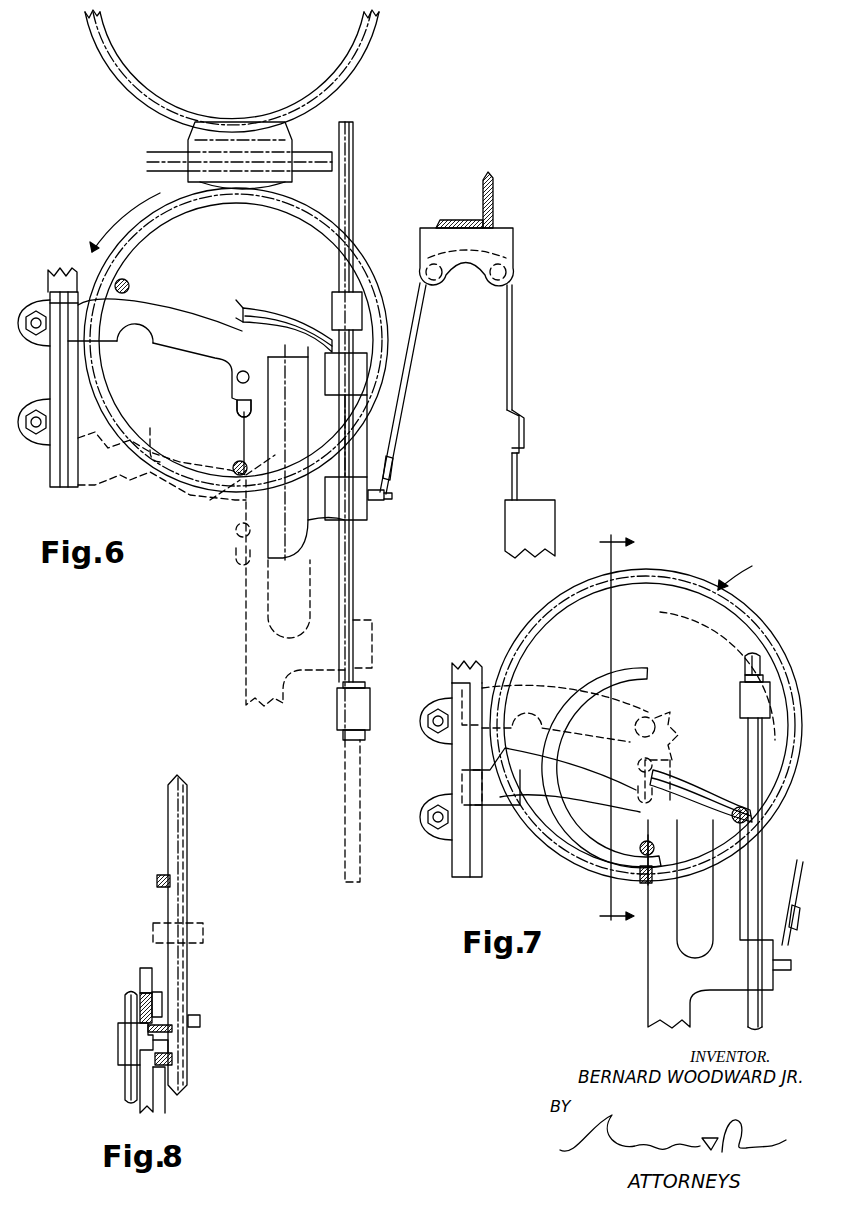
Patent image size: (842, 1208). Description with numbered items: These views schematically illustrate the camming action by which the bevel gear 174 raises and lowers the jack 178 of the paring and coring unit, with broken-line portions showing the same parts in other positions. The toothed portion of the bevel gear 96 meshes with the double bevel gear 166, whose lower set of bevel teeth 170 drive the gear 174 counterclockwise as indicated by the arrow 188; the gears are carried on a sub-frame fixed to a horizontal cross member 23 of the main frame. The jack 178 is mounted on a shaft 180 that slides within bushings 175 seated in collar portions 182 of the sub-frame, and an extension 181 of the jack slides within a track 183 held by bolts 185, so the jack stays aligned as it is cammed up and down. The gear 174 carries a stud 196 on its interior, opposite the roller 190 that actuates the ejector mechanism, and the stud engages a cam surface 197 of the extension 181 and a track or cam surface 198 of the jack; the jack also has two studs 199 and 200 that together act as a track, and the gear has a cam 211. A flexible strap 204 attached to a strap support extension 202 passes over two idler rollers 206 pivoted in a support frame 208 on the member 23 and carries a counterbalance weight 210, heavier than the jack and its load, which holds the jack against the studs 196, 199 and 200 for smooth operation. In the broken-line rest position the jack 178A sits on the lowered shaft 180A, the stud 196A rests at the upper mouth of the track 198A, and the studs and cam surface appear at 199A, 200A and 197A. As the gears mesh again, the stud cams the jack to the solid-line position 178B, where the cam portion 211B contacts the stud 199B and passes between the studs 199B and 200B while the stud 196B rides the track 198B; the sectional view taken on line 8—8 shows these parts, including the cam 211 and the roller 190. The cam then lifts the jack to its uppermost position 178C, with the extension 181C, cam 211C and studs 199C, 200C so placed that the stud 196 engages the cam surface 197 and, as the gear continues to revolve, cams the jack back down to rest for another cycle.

In FIG. 6, the bevel gear 96 is at (372, 58).
In FIG. 6, the double bevel gear 166 is at (290, 140).
In FIG. 6, the lower set of bevel teeth 170 is at (290, 180).
In FIG. 6, the shaft 180 is at (353, 150).
In FIG. 7, the shaft 180 is at (763, 1010).
In FIG. 8, the shaft 180 is at (124, 1004).
In FIG. 6, the shaft in rest position 180A is at (345, 808).
In FIG. 6, the collar portions of sub-frame 182 is at (360, 305).
In FIG. 6, the bevel gear 174 is at (361, 248).
In FIG. 7, the bevel gear 174 is at (690, 580).
In FIG. 6, the bushings 175 is at (357, 272).
In FIG. 6, the arrow 188 is at (121, 219).
In FIG. 7, the arrow 188 is at (751, 572).
In FIG. 6, the track 183 is at (52, 292).
In FIG. 7, the track 183 is at (451, 769).
In FIG. 6, the bolts 185 is at (36, 316).
In FIG. 6, the extension 181 is at (165, 322).
In FIG. 8, the extension 181 is at (145, 1024).
In FIG. 6, the cam surface 197 is at (138, 327).
In FIG. 6, the cam surface in intermediate position 197A is at (150, 428).
In FIG. 6, the stud 199 is at (236, 377).
In FIG. 6, the stud 200 is at (236, 405).
In FIG. 6, the stud 196 is at (128, 282).
In FIG. 8, the stud 196 is at (163, 1024).
In FIG. 6, the track or cam surface 198 is at (247, 318).
In FIG. 6, the upper mouth of track 198A is at (238, 460).
In FIG. 6, the stud in rest position 196A is at (238, 476).
In FIG. 6, the stud in rest position 199A is at (237, 535).
In FIG. 6, the stud in rest position 200A is at (234, 562).
In FIG. 6, the jack 178 is at (262, 447).
In FIG. 6, the jack in rest position 178A is at (260, 634).
In FIG. 6, the flexible strap 204 is at (405, 356).
In FIG. 7, the flexible strap 204 is at (788, 915).
In FIG. 6, the strap support extension 202 is at (390, 495).
In FIG. 6, the support frame 208 is at (513, 247).
In FIG. 6, the idler rollers 206 is at (497, 283).
In FIG. 6, the horizontal cross member 23 is at (494, 213).
In FIG. 6, the counterbalance weight 210 is at (547, 522).
In FIG. 7, the section line 8— 8 is at (609, 731).
In FIG. 7, the extension in uppermost position 181C is at (552, 690).
In FIG. 7, the cam portion 211B is at (620, 818).
In FIG. 8, the cam portion 211B is at (174, 1060).
In FIG. 7, the cam portion in uppermost position 211C is at (712, 612).
In FIG. 7, the jack in uppermost position 178C is at (680, 737).
In FIG. 7, the stud in uppermost position 199C is at (636, 760).
In FIG. 7, the stud in uppermost position 200C is at (634, 796).
In FIG. 7, the track in intermediate position 198B is at (702, 790).
In FIG. 7, the stud in intermediate position 196B is at (752, 820).
In FIG. 7, the stud in intermediate position 199B is at (636, 850).
In FIG. 8, the stud in intermediate position 199B is at (160, 1047).
In FIG. 7, the stud in intermediate position 200B is at (648, 886).
In FIG. 8, the stud in intermediate position 200B is at (165, 1078).
In FIG. 7, the jack in intermediate position 178B is at (650, 990).
In FIG. 8, the cam 211 is at (157, 880).
In FIG. 8, the roller 190 is at (200, 1018).